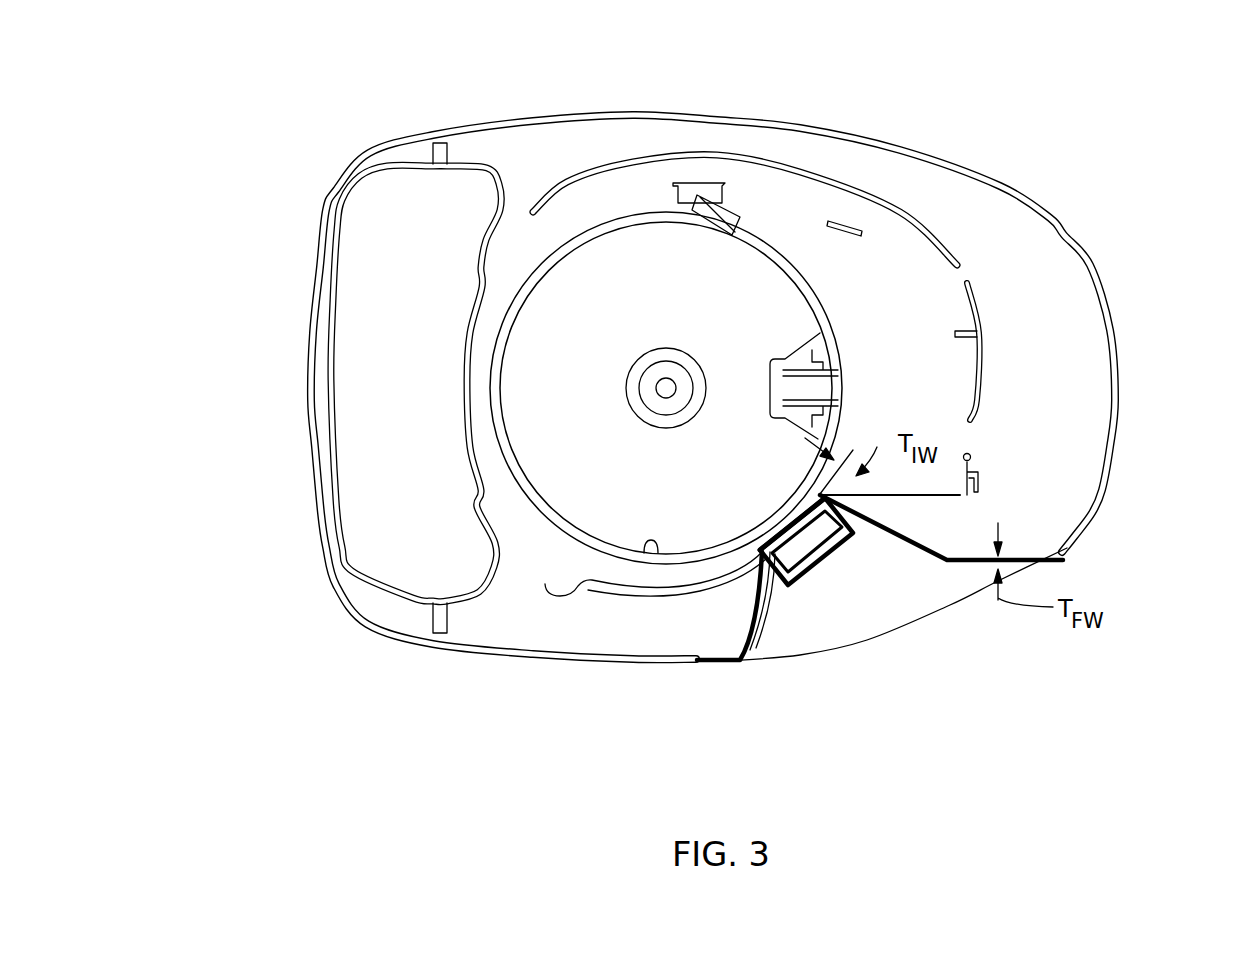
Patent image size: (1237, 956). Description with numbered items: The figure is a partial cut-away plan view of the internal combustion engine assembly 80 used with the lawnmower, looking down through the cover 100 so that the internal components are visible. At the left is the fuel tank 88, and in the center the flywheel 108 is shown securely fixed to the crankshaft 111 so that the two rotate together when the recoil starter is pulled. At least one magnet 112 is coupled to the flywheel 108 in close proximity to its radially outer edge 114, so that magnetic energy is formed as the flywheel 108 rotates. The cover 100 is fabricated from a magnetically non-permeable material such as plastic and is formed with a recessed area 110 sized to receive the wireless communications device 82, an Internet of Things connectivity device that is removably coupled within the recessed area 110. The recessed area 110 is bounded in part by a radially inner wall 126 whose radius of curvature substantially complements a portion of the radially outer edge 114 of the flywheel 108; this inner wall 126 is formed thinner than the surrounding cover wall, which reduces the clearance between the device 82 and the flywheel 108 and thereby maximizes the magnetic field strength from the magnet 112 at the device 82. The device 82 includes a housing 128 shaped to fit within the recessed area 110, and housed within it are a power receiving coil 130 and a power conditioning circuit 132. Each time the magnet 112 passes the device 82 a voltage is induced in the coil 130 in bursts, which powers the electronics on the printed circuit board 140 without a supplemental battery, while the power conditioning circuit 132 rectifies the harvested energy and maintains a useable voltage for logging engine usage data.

The internal combustion engine assembly 80 is at (977, 88).
The wireless communications device 82 is at (810, 583).
The fuel tank 88 is at (365, 389).
The cover 100 is at (1053, 298).
The flywheel 108 is at (607, 523).
The recessed area 110 is at (888, 593).
The crankshaft 111 is at (657, 373).
The magnet 112 is at (819, 347).
The radially outer edge 114 is at (650, 540).
The radially inner wall 126 is at (776, 540).
The housing 128 is at (772, 600).
The power receiving coil 130 is at (832, 517).
The power conditioning circuit 132 is at (792, 513).
The printed circuit board 140 is at (797, 500).